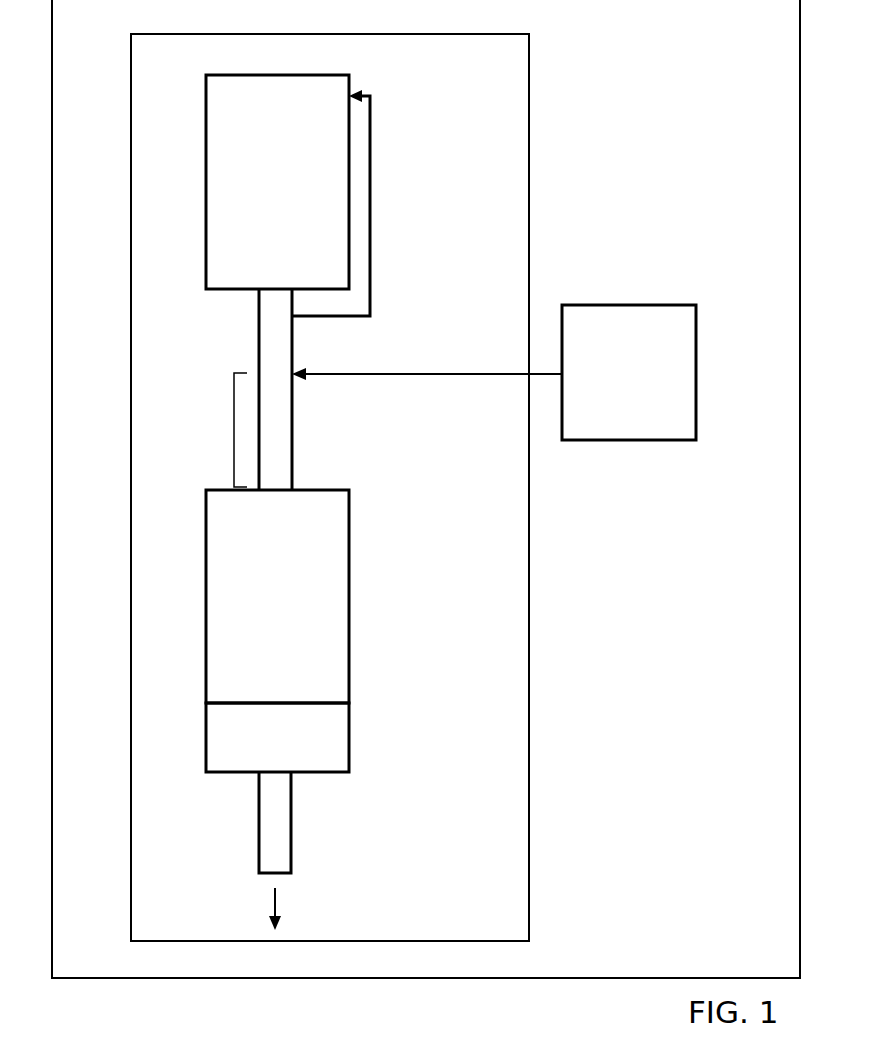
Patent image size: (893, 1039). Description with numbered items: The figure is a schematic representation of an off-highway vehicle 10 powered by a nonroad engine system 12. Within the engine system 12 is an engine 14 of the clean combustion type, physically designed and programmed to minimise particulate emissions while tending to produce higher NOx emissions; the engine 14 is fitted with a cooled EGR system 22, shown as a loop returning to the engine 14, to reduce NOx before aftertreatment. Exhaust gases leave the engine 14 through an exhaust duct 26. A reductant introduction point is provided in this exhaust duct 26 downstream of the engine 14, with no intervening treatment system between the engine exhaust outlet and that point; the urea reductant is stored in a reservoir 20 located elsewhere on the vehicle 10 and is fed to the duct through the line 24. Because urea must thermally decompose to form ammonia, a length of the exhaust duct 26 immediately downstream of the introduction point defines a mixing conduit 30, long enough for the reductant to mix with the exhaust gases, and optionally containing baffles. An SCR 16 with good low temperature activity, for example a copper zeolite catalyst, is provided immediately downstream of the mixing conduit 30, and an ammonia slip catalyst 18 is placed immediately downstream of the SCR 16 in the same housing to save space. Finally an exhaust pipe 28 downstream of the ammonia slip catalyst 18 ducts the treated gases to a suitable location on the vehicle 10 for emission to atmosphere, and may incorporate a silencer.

The off-highway vehicle 10 is at (709, 941).
The engine system 12 is at (473, 907).
The engine 14 is at (265, 196).
The SCR 16 is at (265, 609).
The ammonia slip catalyst 18 is at (265, 749).
The reservoir 20 is at (615, 386).
The cooled EGR system 22 is at (370, 180).
The control signal line 24 is at (392, 371).
The exhaust duct 26 is at (292, 457).
The exhaust pipe 28 is at (292, 843).
The mixing conduit 30 is at (234, 429).